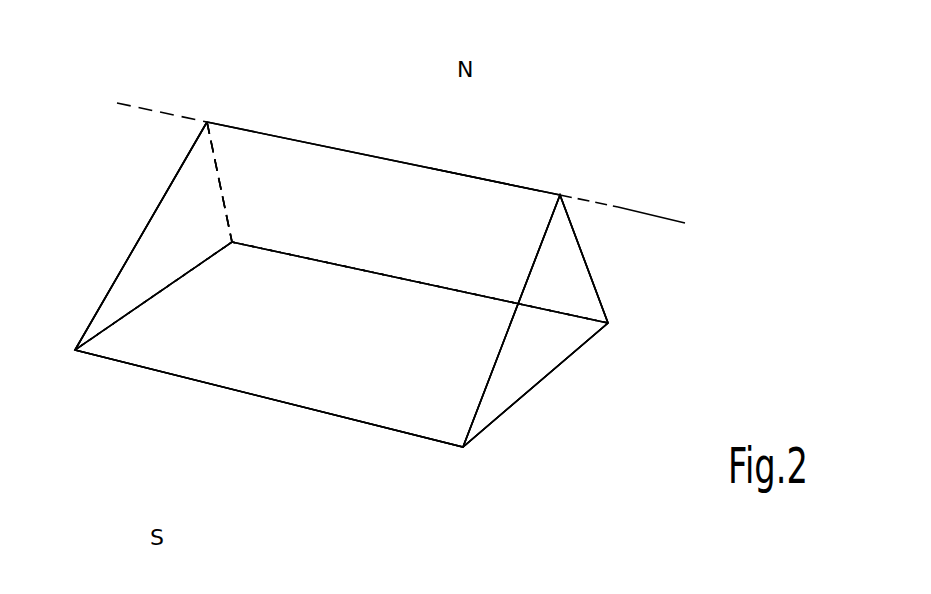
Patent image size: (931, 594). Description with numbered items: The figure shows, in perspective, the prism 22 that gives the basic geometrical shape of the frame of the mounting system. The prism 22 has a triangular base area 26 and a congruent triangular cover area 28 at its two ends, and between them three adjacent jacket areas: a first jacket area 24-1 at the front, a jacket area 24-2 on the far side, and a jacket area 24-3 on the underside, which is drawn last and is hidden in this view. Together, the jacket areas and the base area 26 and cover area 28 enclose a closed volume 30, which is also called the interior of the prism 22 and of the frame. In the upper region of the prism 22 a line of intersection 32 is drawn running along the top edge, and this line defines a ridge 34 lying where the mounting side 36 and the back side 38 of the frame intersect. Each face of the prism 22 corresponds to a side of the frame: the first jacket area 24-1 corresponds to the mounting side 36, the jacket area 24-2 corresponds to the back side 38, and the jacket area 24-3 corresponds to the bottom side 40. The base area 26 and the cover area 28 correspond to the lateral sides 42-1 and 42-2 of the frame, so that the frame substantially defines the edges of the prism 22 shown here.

The prism 22 is at (642, 212).
The line of intersection 32 is at (127, 102).
The ridge 34 is at (478, 175).
The cover area 28 is at (133, 236).
The lateral side 42-2 is at (153, 237).
The base area 26 is at (582, 322).
The lateral side 42-1 is at (568, 340).
The first jacket area 24-1 is at (317, 305).
The mounting side 36 is at (223, 325).
The jacket area 24-2 is at (407, 177).
The back side 38 is at (393, 180).
The jacket area 24-3 is at (341, 382).
The bottom side 40 is at (385, 380).
The volume 30 is at (332, 328).